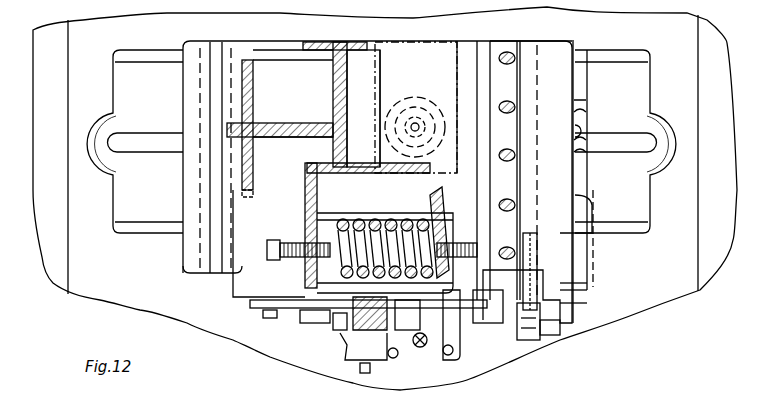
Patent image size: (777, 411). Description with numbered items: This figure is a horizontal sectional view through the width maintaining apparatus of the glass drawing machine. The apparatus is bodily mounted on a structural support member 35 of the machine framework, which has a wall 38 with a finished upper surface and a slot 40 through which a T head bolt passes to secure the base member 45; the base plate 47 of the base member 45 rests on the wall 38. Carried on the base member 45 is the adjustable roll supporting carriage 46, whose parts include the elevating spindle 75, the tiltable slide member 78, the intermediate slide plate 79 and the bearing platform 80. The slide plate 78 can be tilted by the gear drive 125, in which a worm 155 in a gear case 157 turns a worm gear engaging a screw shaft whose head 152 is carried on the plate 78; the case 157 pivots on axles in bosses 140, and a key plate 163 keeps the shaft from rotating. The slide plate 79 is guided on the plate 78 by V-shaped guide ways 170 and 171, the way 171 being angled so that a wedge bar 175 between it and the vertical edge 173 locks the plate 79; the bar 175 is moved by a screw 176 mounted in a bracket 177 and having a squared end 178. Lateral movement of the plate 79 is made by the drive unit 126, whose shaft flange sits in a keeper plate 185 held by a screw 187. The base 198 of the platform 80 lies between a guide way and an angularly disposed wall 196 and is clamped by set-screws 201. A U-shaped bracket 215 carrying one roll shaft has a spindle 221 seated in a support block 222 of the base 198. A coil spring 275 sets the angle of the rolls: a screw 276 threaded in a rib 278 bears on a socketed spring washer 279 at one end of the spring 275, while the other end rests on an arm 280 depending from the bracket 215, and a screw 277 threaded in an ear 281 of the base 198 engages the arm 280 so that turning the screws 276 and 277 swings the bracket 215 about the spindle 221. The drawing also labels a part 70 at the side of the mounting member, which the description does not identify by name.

The structural support member 35 is at (64, 223).
The wall 38 is at (85, 272).
The slot 40 is at (136, 143).
The base member 45 is at (580, 70).
The roll supporting carriage 46 is at (548, 55).
The base plate 47 is at (578, 107).
The left side plate 70 is at (145, 57).
The elevating spindle 75 is at (332, 87).
The tiltable slide member 78 is at (198, 185).
The intermediate slide plate 79 is at (217, 260).
The bearing platform 80 is at (268, 70).
The gear drive 125 is at (340, 356).
The drive unit 126 is at (335, 332).
The boss 140 is at (306, 325).
The head 152 is at (408, 332).
The worm 155 is at (366, 331).
The gear case 157 is at (455, 362).
The key plate 163 is at (420, 348).
The guide way 170 is at (149, 42).
The guide way 171 is at (580, 175).
The edge 173 is at (518, 172).
The wedge bar 175 is at (583, 240).
The screw 176 is at (585, 285).
The bracket 177 is at (572, 303).
The squared end 178 is at (540, 333).
The keeper plate 185 is at (256, 305).
The screw 187 is at (262, 318).
The angularly disposed wall 196 is at (505, 90).
The base 198 is at (293, 73).
The set-screw 201 is at (508, 110).
The U-shaped bracket 215 is at (452, 72).
The spindle 221 is at (422, 98).
The support block 222 is at (458, 74).
The coil spring 275 is at (373, 222).
The screw 276 is at (280, 258).
The screw 277 is at (487, 245).
The rib 278 is at (306, 230).
The socketed spring washer 279 is at (329, 218).
The arm 280 is at (437, 214).
The ear 281 is at (476, 326).